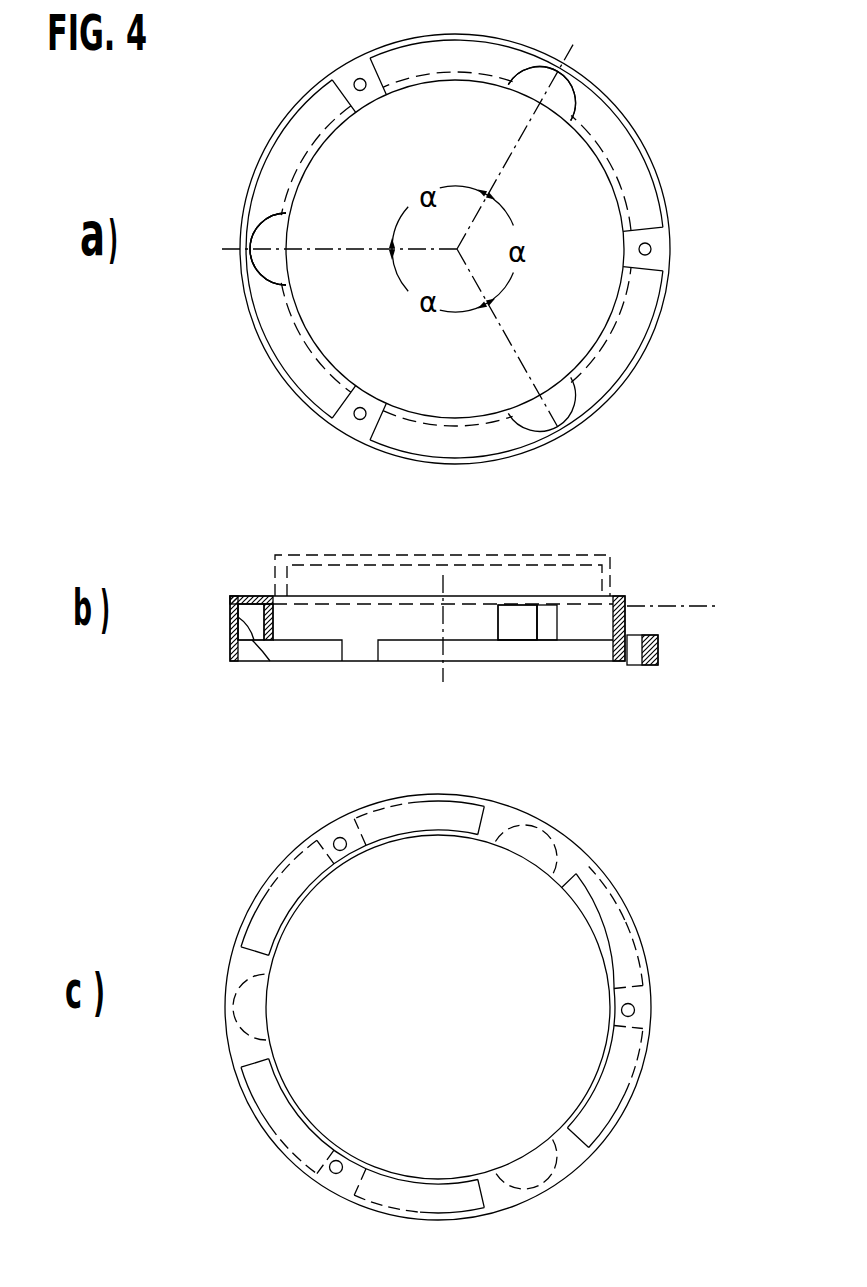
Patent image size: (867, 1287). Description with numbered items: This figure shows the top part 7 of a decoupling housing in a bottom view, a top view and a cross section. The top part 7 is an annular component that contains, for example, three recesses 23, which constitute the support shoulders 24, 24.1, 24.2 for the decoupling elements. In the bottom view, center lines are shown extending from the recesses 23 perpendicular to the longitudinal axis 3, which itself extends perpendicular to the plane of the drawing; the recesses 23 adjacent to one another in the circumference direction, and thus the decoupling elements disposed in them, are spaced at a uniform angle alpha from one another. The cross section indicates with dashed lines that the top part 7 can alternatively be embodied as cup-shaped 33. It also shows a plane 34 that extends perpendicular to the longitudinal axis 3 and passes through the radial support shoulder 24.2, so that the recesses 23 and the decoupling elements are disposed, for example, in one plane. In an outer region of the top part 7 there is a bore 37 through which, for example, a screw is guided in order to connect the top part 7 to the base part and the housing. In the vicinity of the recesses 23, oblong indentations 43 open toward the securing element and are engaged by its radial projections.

The longitudinal axis 3 is at (457, 248).
The top part 7 is at (648, 347).
The recess 23 is at (590, 82).
The support shoulder 24 is at (278, 238).
The support shoulder 24.1 is at (256, 229).
The radial support shoulder 24.2 is at (550, 76).
The cup-shaped embodiment 33 is at (609, 556).
The plane 34 is at (670, 606).
The bore 37 is at (357, 79).
The oblong indentation 43 is at (323, 648).